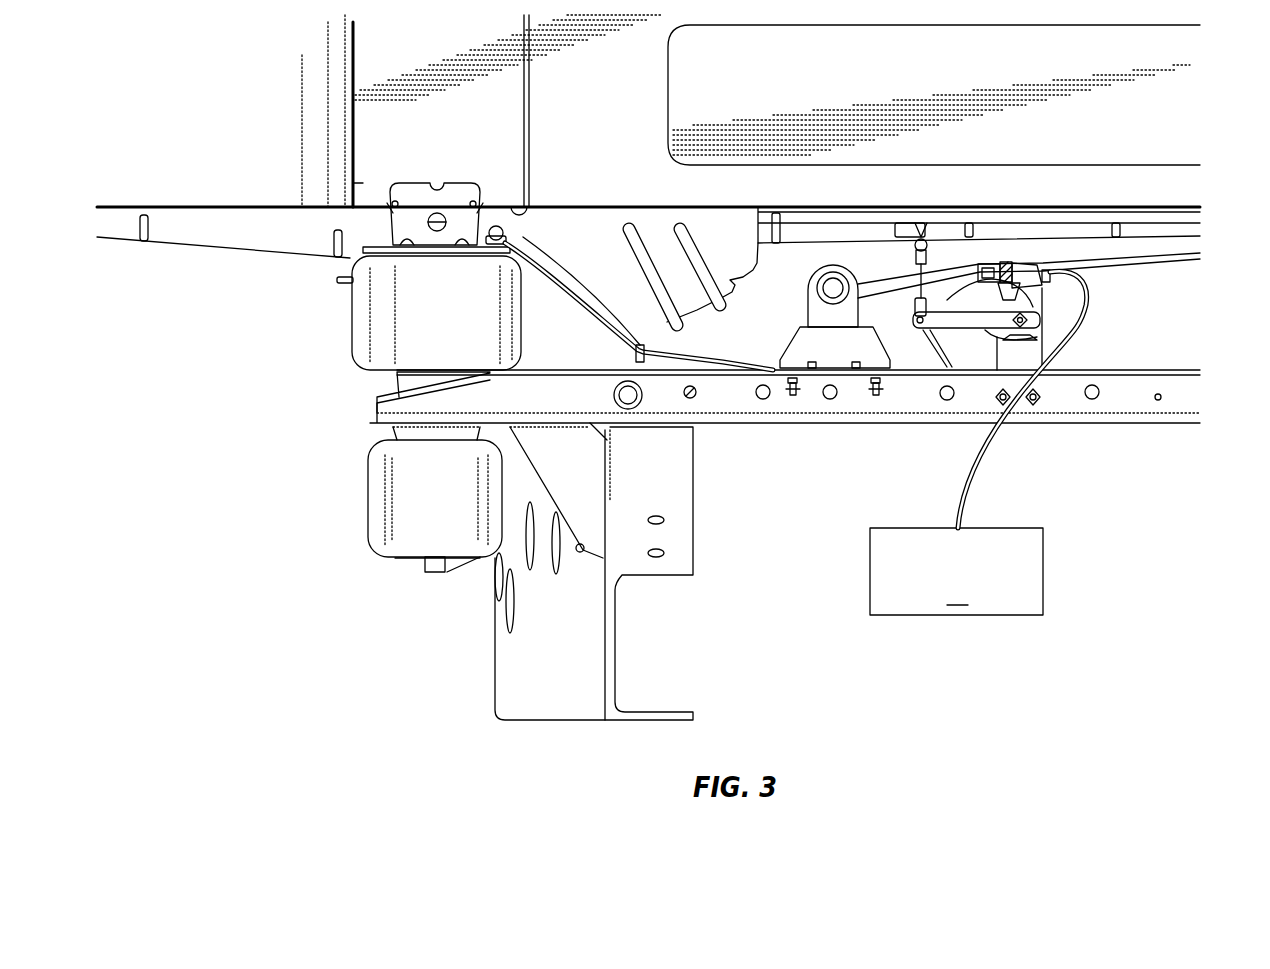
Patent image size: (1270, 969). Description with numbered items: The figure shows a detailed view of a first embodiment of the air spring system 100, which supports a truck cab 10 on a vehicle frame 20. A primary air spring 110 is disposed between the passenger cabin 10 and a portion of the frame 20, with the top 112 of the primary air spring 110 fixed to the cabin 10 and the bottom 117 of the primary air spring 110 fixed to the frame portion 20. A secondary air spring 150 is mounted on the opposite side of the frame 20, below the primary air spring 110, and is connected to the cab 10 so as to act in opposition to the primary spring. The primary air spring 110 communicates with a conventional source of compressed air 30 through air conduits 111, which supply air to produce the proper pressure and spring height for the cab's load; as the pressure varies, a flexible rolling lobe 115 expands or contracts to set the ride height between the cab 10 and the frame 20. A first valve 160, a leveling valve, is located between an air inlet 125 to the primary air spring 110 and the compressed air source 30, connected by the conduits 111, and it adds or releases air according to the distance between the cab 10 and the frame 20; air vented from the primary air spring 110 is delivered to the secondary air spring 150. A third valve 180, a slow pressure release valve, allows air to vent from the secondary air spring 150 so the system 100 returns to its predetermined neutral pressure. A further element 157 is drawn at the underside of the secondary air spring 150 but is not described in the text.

The truck cab 10 is at (843, 77).
The frame 20 is at (1117, 397).
The source of compressed air 30 is at (956, 571).
The air spring system 100 is at (210, 384).
The primary air spring 110 is at (330, 333).
The air conduits 111 is at (693, 353).
The top of the primary air spring 112 is at (367, 250).
The flexible rolling lobe 115 is at (383, 310).
The bottom of the primary air spring 117 is at (393, 377).
The air inlet 125 is at (510, 240).
The secondary air spring 150 is at (322, 499).
The lower air spring plate 157 is at (403, 561).
The first valve 160 is at (1066, 292).
The third valve 180 is at (427, 570).